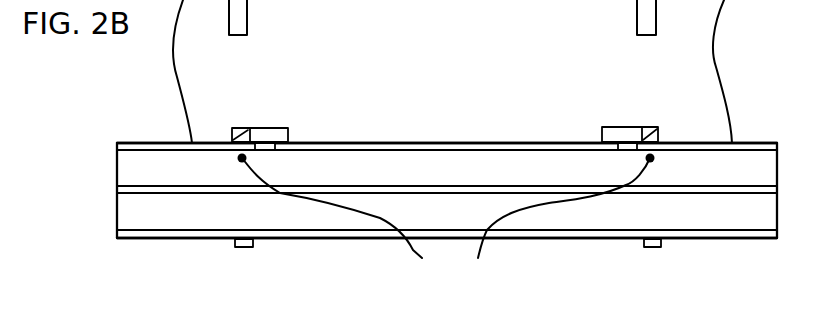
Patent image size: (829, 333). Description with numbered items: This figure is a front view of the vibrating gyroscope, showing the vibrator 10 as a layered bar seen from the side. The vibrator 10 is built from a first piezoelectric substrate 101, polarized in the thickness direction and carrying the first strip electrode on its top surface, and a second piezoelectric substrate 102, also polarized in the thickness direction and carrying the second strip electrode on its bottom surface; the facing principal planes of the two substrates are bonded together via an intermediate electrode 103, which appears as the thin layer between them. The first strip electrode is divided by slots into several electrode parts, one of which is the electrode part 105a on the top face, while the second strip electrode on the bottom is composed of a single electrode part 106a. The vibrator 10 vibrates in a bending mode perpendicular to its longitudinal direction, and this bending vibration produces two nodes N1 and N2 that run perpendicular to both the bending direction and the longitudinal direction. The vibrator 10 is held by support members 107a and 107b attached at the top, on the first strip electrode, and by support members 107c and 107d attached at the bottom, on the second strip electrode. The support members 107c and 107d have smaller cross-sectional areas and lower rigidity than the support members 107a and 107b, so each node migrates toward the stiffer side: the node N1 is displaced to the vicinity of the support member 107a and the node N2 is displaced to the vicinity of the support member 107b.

The vibrator 10 is at (148, 115).
The first piezoelectric substrate 101 is at (122, 163).
The second piezoelectric substrate 102 is at (128, 220).
The intermediate electrode 103 is at (120, 190).
The electrode part 105a is at (443, 143).
The electrode part 106a is at (353, 238).
The support member 107a is at (243, 35).
The support member 107b is at (651, 33).
The support member 107c is at (248, 247).
The support member 107d is at (656, 248).
The node N1 is at (343, 218).
The node N2 is at (560, 218).